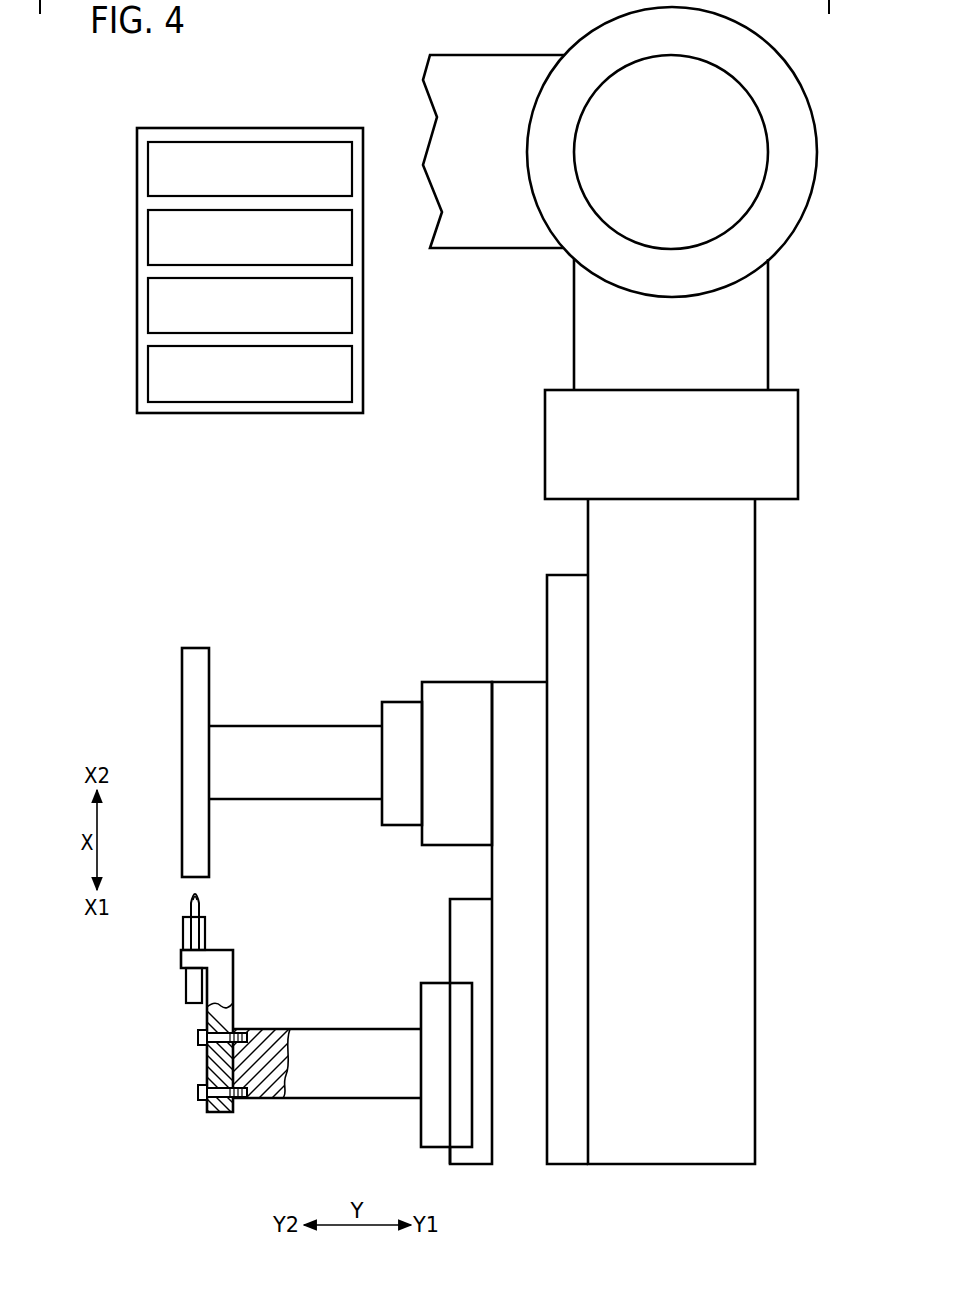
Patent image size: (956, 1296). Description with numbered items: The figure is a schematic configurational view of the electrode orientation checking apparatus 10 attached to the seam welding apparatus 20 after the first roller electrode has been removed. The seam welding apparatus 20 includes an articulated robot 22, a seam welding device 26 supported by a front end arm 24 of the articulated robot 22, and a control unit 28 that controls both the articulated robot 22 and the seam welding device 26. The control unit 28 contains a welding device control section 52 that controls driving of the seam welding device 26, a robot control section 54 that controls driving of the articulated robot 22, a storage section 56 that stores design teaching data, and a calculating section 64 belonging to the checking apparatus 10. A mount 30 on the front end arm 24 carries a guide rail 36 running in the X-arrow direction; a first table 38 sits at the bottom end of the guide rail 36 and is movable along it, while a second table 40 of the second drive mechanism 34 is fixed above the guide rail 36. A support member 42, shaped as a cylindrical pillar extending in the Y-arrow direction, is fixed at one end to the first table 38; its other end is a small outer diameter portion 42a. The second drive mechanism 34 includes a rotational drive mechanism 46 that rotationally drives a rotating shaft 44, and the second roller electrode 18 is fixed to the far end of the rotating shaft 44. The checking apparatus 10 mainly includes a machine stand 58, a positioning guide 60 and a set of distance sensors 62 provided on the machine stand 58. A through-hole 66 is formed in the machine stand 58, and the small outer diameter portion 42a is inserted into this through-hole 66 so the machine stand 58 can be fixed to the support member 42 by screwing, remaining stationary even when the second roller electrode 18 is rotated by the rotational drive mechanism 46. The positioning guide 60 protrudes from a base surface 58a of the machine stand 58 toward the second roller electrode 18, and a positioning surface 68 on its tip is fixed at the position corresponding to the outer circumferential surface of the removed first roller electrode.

The electrode orientation checking apparatus 10 is at (140, 1072).
The second roller electrode 18 is at (182, 668).
The seam welding apparatus 20 is at (294, 34).
The articulated robot 22 is at (471, 55).
The front end arm 24 is at (627, 1156).
The seam welding device 26 is at (330, 640).
The control unit 28 is at (180, 128).
The mount 30 is at (512, 1156).
The second drive mechanism 34 is at (290, 815).
The guide rail 36 is at (455, 917).
The first table 38 is at (432, 990).
The second table 40 is at (443, 690).
The support member 42 is at (320, 1035).
The small outer diameter portion 42a is at (213, 1060).
The rotating shaft 44 is at (248, 735).
The rotational drive mechanism 46 is at (393, 705).
The welding device control section 52 is at (148, 155).
The robot control section 54 is at (148, 226).
The storage section 56 is at (148, 292).
The machine stand 58 is at (230, 977).
The base surface 58a is at (196, 948).
The positioning guide 60 is at (183, 935).
The distance sensors 62 is at (200, 907).
The calculating section 64 is at (148, 362).
The through-hole 66 is at (208, 1069).
The positioning surface 68 is at (187, 914).